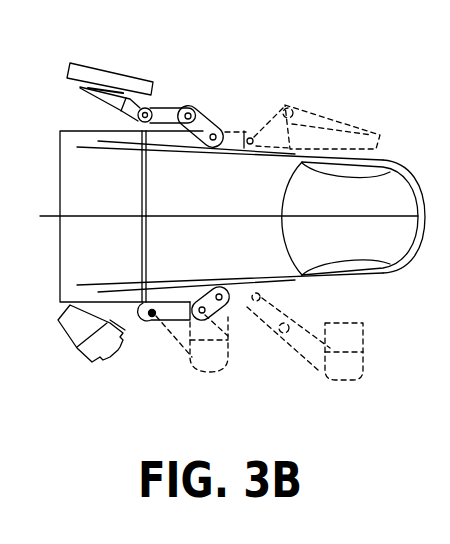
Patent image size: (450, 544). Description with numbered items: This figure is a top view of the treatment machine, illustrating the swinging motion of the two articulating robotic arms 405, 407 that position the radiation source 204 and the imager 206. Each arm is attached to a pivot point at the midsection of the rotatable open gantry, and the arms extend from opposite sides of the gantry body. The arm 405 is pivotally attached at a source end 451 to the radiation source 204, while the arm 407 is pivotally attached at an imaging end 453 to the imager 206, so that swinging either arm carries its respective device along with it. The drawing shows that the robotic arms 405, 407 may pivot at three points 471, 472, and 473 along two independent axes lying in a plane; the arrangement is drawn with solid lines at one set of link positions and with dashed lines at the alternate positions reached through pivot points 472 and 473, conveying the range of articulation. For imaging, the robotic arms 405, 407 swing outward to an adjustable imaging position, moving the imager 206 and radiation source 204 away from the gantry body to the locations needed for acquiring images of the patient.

The imager 206 is at (85, 63).
The imaging end 453 is at (152, 104).
The robotic arm 407 is at (175, 104).
The pivot point 471 is at (211, 129).
The pivot point 472 is at (252, 128).
The pivot point 473 is at (290, 106).
The radiation source 204 is at (55, 332).
The source end 451 is at (124, 330).
The robotic arm 405 is at (138, 328).